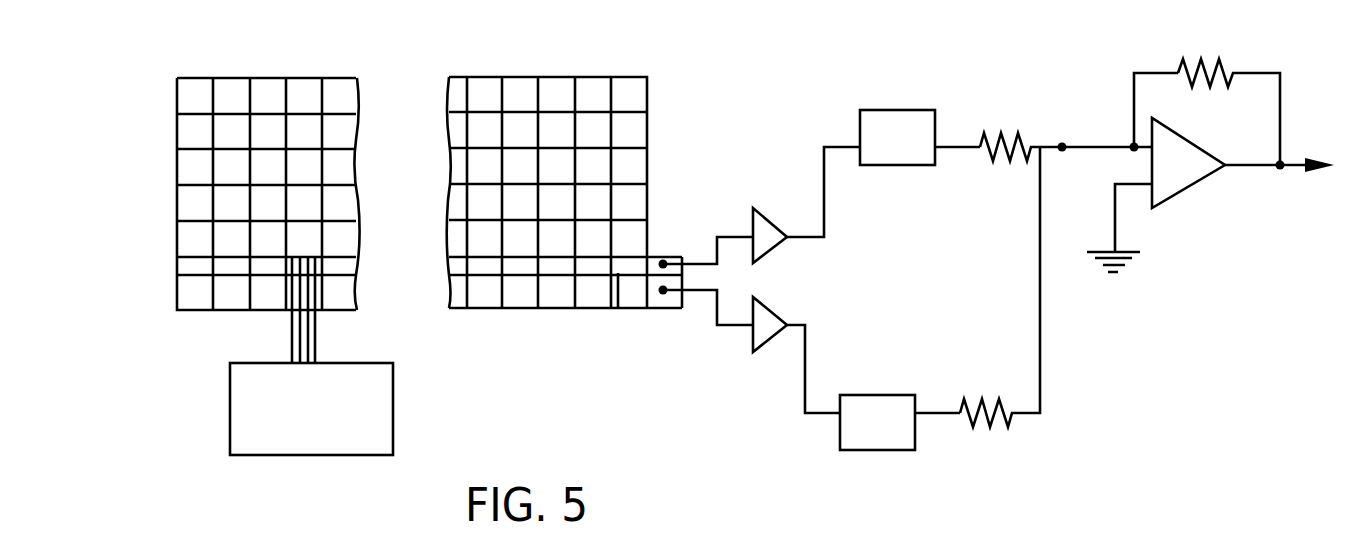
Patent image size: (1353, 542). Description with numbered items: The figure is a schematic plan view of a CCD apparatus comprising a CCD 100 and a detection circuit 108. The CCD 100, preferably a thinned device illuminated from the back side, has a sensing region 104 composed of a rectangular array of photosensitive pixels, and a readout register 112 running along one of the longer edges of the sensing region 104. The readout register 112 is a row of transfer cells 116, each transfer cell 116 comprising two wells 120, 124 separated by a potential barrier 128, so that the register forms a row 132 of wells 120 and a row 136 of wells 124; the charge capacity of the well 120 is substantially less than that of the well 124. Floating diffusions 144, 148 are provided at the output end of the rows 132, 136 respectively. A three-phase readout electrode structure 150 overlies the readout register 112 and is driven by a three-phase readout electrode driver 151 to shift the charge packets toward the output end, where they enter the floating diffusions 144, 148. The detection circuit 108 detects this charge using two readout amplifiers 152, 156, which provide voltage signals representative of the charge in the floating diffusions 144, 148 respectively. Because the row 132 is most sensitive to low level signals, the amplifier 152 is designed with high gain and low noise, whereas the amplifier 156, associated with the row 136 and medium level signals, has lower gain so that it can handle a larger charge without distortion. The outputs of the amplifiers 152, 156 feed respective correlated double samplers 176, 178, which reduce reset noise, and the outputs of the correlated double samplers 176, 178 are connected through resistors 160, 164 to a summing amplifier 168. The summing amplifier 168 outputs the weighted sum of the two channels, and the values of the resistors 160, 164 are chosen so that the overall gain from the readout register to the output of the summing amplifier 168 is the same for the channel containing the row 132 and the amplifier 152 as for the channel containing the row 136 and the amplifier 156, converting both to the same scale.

The CCD 100 is at (168, 68).
The sensing region 104 is at (690, 32).
The detection circuit 108 is at (982, 84).
The readout register 112 is at (483, 320).
The transfer cell 116 is at (512, 300).
The well 120 is at (557, 267).
The well 124 is at (272, 302).
The potential barrier 128 is at (618, 273).
The row of wells 132 is at (182, 265).
The row of wells 136 is at (185, 297).
The floating diffusion 144 is at (652, 262).
The floating diffusion 148 is at (657, 300).
The three-phase readout electrode structure 150 is at (308, 296).
The three-phase readout electrode driver 151 is at (393, 420).
The readout amplifier 152 is at (765, 222).
The readout amplifier 156 is at (760, 310).
The resistor 160 is at (997, 133).
The resistor 164 is at (987, 398).
The summing amplifier 168 is at (1175, 180).
The correlated double sampler 176 is at (878, 117).
The correlated double sampler 178 is at (865, 398).